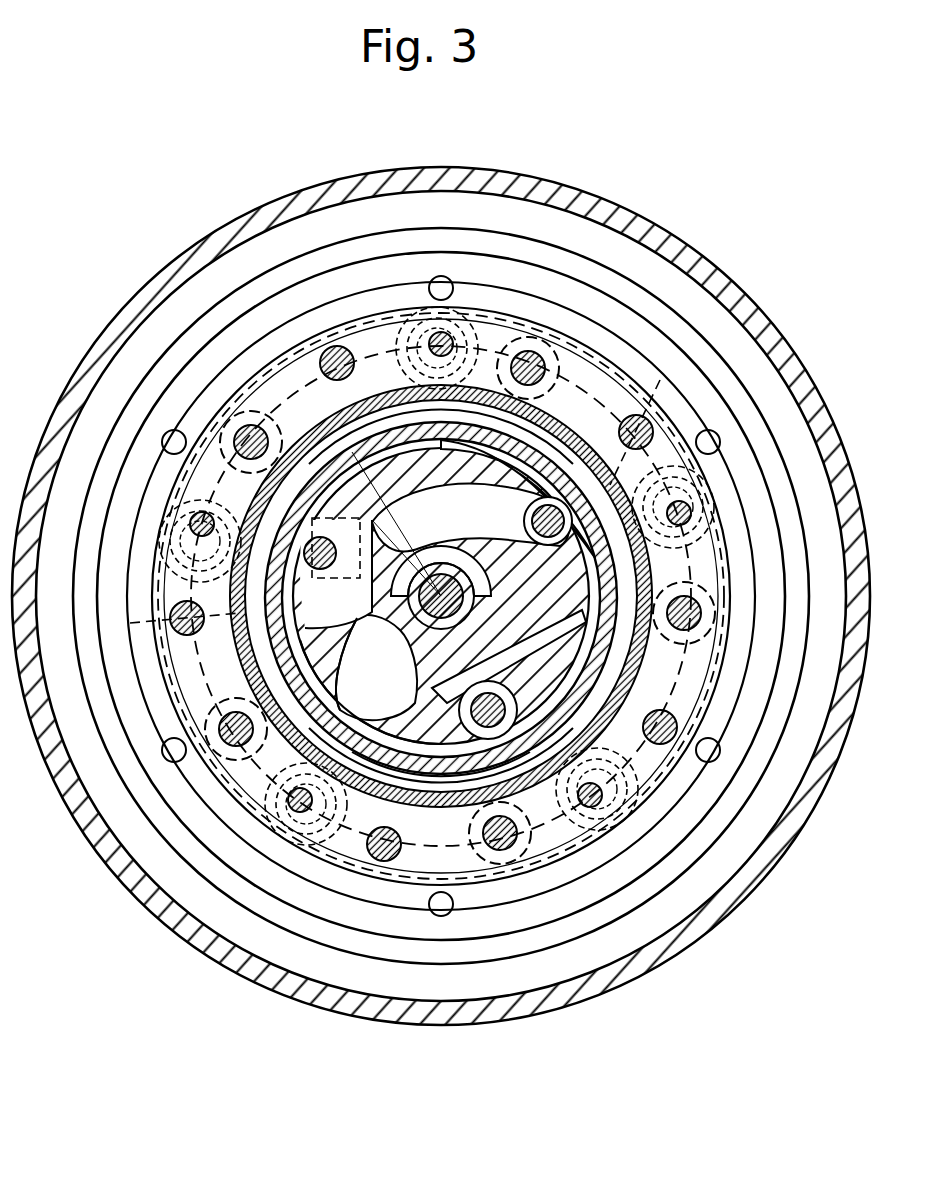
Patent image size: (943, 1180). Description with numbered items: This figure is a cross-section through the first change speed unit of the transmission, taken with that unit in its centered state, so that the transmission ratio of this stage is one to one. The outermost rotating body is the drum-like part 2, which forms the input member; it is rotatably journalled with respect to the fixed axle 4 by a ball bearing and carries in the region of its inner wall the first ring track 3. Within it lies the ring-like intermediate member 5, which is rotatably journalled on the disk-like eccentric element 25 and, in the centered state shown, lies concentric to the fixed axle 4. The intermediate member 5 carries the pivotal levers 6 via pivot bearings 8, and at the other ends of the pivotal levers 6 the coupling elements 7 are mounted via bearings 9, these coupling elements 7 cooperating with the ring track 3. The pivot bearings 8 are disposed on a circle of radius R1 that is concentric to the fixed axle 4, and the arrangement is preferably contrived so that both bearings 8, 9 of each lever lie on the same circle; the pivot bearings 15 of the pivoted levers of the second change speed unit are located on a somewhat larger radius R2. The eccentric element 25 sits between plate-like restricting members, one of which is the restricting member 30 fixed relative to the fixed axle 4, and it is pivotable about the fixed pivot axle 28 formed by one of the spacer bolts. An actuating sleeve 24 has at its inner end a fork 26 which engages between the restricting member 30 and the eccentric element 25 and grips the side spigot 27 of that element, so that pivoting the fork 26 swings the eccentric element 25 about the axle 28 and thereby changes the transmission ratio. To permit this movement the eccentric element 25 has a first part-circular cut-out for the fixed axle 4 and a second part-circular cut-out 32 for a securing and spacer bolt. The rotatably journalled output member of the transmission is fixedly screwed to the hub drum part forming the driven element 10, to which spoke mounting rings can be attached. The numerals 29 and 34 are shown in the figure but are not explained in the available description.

The drum-like part 2 is at (600, 270).
The first ring track 3 is at (635, 335).
The fixed axle 4 is at (478, 602).
The ring-like intermediate member 5 is at (700, 685).
The pivotal levers 6 is at (466, 340).
The coupling elements 7 is at (492, 340).
The pivot bearings 8 is at (533, 352).
The bearings 9 is at (412, 330).
The driven element 10 is at (548, 195).
The pivot bearings 15 is at (330, 352).
The actuating sleeve 24 is at (412, 682).
The eccentric element 25 is at (461, 770).
The fork 26 is at (342, 618).
The side spigot 27 is at (330, 574).
The fixed pivot axle 28 is at (507, 682).
The inner ring 29 is at (262, 676).
The restricting member 30 is at (612, 668).
The second part-circular cut-out 32 is at (552, 504).
The rotor rim arc 34 is at (418, 782).
The radius R1 is at (372, 520).
The radius R2 is at (352, 452).